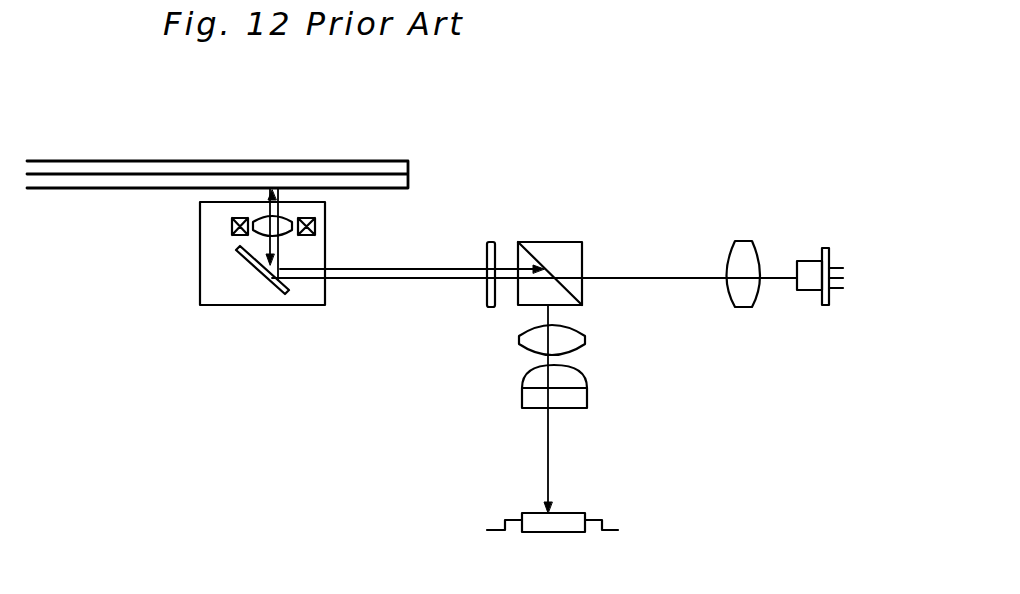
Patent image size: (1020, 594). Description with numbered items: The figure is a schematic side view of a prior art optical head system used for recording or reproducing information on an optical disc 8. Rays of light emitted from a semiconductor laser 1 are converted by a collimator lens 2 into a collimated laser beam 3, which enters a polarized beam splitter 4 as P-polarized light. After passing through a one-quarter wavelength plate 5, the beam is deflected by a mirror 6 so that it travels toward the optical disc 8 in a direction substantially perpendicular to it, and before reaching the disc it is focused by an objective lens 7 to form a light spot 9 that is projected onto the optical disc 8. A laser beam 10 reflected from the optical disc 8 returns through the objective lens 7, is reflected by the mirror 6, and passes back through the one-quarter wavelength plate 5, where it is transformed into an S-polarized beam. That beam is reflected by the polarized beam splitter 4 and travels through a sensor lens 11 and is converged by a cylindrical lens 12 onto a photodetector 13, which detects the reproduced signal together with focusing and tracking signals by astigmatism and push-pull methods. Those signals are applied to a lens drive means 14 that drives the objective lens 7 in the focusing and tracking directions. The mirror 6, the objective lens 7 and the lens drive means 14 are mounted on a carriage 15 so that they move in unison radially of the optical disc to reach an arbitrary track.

The semiconductor laser 1 is at (828, 250).
The collimator lens 2 is at (742, 241).
The collimated laser beam 3 is at (648, 277).
The polarized beam splitter 4 is at (582, 242).
The 1/4 wavelength plate 5 is at (488, 308).
The mirror 6 is at (266, 282).
The objective lens 7 is at (298, 212).
The optical disc 8 is at (409, 173).
The light spot 9 is at (276, 195).
The reflected laser beam 10 is at (409, 268).
The sensor lens 11 is at (586, 340).
The cylindrical lens 12 is at (588, 398).
The photodetector 13 is at (557, 533).
The lens drive means 14 is at (231, 227).
The carriage 15 is at (213, 306).